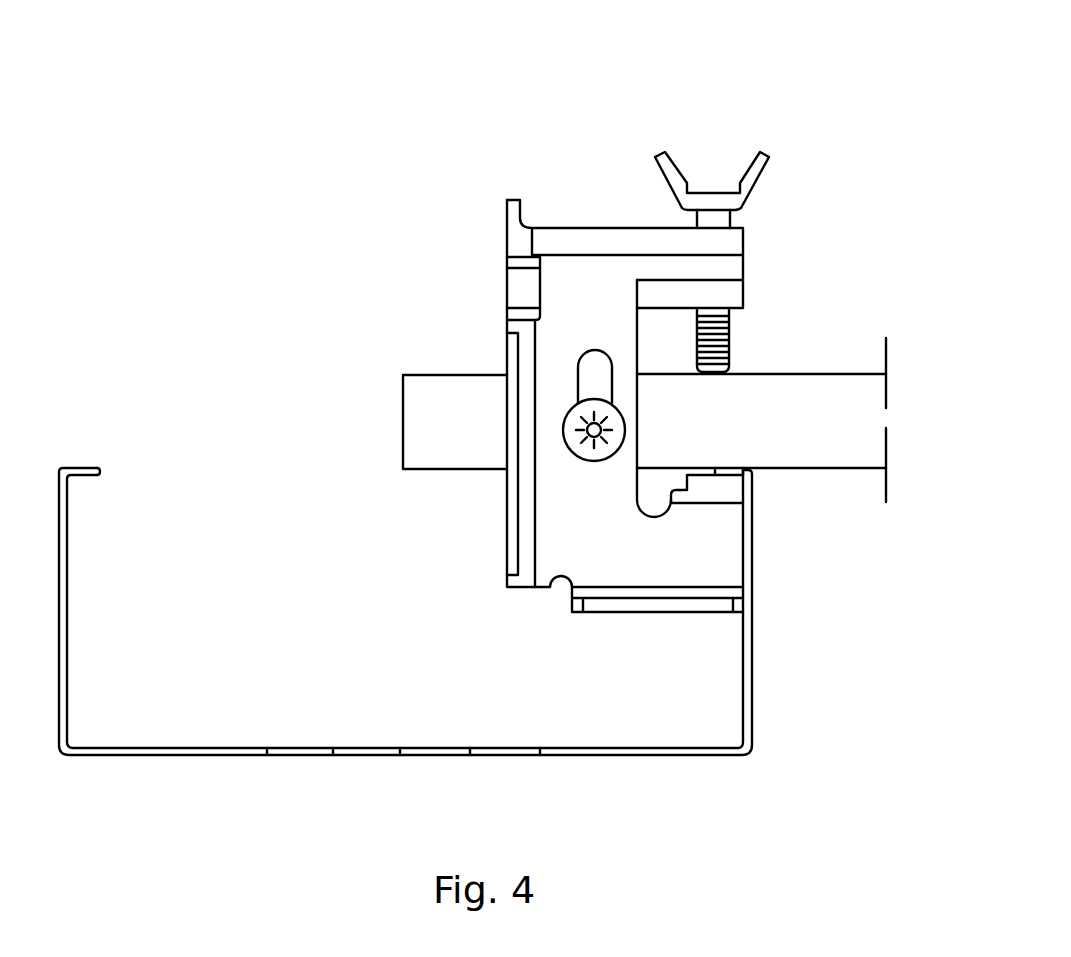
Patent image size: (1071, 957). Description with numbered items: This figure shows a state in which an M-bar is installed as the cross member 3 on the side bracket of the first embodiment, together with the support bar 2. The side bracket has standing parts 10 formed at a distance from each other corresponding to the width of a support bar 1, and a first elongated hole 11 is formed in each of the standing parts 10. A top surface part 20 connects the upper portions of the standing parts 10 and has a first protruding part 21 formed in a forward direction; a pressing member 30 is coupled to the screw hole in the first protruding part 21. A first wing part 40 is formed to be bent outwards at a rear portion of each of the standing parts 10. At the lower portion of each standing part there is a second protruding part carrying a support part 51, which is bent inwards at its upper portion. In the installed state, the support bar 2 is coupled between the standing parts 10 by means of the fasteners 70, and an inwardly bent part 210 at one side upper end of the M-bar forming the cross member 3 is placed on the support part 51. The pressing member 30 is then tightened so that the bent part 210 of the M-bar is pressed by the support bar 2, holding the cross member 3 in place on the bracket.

The support bar 1 is at (611, 110).
The support bar 2 is at (430, 383).
The cross member 3 is at (605, 755).
The standing parts 10 is at (728, 323).
The first elongated hole 11 is at (590, 363).
The top surface part 20 is at (583, 225).
The first protruding part 21 is at (728, 267).
The pressing member 30 is at (680, 163).
The first wing part 40 is at (513, 550).
The support part 51 is at (720, 488).
The fasteners 70 is at (573, 443).
The bent part 210 is at (730, 467).